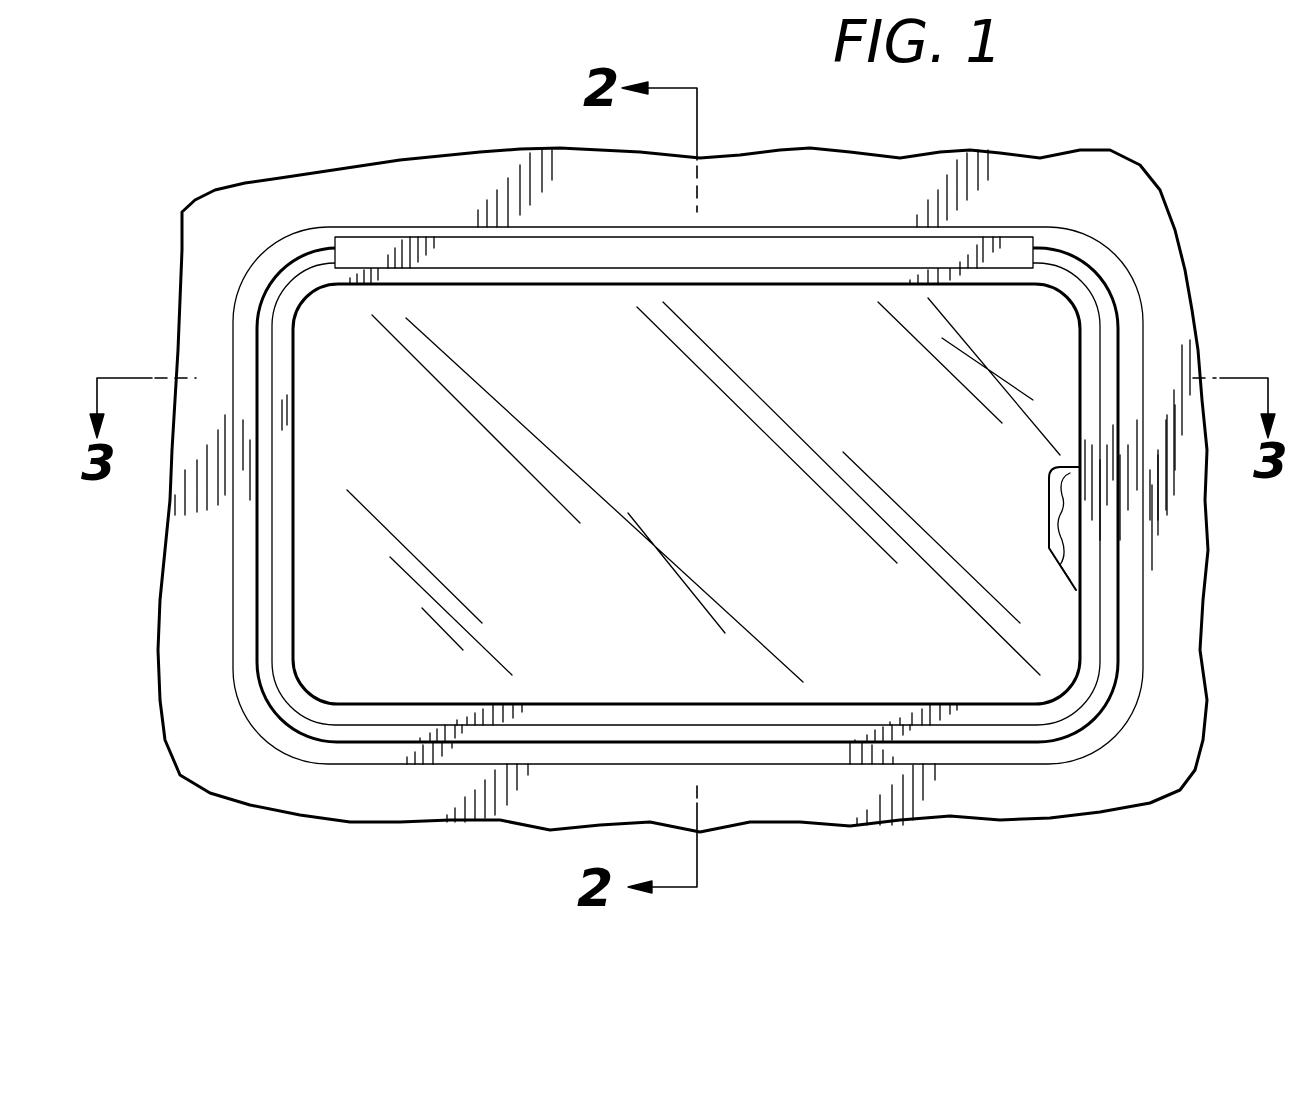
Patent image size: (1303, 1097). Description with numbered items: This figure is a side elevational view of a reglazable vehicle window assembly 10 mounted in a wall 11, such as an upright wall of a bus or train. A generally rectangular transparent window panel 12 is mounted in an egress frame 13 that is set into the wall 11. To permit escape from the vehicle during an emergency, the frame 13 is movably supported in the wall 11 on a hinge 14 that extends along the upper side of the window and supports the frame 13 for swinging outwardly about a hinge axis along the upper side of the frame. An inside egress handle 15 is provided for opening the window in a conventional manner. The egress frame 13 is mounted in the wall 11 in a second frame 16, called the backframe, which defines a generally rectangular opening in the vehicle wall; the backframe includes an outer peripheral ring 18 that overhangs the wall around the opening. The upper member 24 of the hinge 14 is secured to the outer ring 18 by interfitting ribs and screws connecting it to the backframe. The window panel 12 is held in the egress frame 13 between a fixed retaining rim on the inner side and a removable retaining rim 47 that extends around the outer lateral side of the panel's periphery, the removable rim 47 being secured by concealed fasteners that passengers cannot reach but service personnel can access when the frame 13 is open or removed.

The vehicle window assembly 10 is at (1130, 168).
The wall 11 is at (1195, 752).
The window panel 12 is at (760, 538).
The frame 13 is at (1106, 283).
The hinge 14 is at (692, 276).
The egress handle 15 is at (1038, 522).
The second frame 16 is at (1108, 237).
The outer peripheral ring 18 is at (1130, 324).
The upper member 24 is at (726, 231).
The removable retaining rim 47 is at (835, 707).